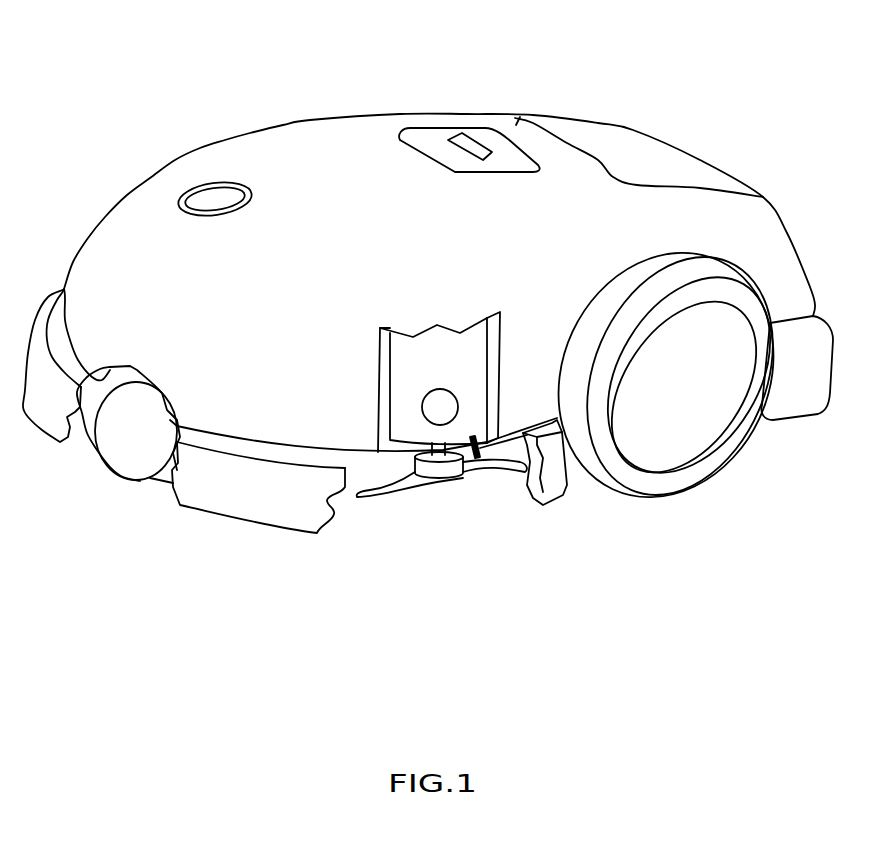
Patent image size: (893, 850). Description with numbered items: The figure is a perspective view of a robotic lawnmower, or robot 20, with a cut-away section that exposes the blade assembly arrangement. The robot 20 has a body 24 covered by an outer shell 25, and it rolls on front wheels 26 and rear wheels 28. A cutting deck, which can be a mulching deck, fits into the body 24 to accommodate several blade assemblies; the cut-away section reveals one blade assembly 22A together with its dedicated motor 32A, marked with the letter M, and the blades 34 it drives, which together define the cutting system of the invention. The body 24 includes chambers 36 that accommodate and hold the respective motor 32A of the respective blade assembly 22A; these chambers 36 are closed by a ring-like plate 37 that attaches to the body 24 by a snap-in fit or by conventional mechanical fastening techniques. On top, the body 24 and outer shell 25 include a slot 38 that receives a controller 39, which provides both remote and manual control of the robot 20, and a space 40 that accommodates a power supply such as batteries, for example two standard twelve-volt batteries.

The robot 20 is at (228, 94).
The body 24 is at (354, 243).
The outer shell 25 is at (350, 114).
The slot 38 is at (435, 147).
The controller 39 is at (513, 143).
The space 40 is at (655, 162).
The front wheels 26 is at (120, 453).
The rear wheels 28 is at (712, 420).
The chambers 36 is at (380, 400).
The motor 32A is at (467, 375).
The blades 34 is at (385, 496).
The blade assembly 22A is at (477, 455).
The ring-like plate 37 is at (520, 492).